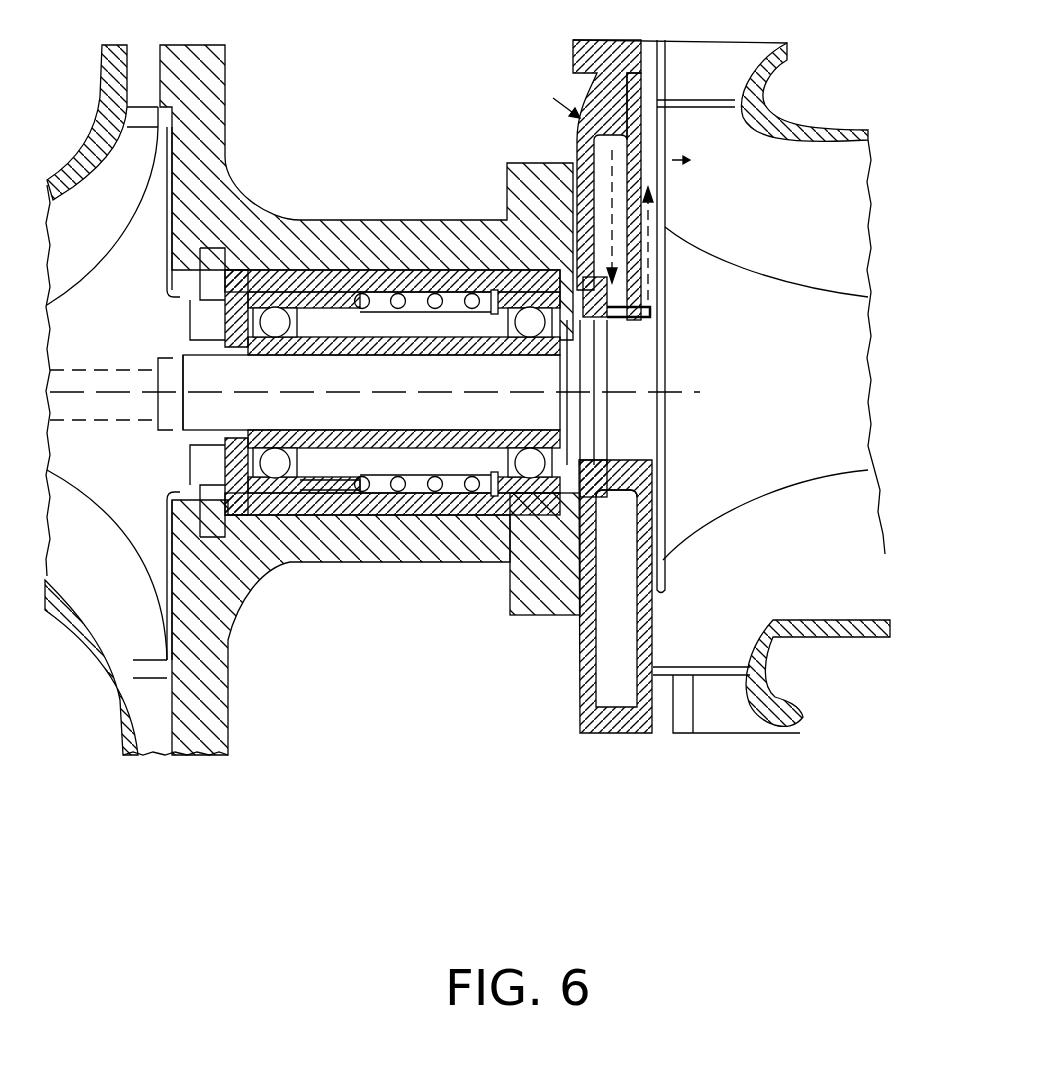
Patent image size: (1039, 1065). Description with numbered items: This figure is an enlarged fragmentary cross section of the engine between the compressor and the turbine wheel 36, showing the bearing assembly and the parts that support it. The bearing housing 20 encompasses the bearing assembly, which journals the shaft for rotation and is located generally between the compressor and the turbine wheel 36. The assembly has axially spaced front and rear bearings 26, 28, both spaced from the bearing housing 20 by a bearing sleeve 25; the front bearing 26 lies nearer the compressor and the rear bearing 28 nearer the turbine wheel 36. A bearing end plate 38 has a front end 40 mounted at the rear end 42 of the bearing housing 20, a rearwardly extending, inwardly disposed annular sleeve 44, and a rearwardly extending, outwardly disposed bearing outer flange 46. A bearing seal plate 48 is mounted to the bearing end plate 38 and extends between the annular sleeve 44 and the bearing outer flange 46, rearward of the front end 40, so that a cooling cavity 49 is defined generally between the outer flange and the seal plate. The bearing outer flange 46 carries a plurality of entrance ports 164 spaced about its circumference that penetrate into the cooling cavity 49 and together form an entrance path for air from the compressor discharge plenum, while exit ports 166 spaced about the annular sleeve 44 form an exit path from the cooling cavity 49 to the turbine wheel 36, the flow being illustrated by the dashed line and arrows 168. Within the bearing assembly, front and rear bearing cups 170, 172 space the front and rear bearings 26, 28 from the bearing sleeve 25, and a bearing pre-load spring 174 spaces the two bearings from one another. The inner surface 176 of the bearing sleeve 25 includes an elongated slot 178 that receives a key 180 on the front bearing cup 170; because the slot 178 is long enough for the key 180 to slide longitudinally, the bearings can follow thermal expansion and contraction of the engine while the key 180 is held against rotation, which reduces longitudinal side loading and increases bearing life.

The bearing housing 20 is at (228, 722).
The bearing sleeve 25 is at (330, 505).
The front bearing 26 is at (231, 615).
The rear bearing 28 is at (497, 458).
The turbine wheel 36 is at (835, 292).
The bearing end plate 38 is at (573, 607).
The front end 40 is at (573, 600).
The rear end 42 is at (660, 560).
The annular sleeve 44 is at (630, 467).
The bearing outer flange 46 is at (633, 663).
The bearing seal plate 48 is at (673, 550).
The cooling cavity 49 is at (627, 155).
The entrance ports 164 is at (590, 128).
The exit ports 166 is at (620, 300).
The dashed line and arrows 168 is at (645, 245).
The front bearing cup 170 is at (258, 485).
The rear bearing cup 172 is at (517, 500).
The bearing pre-load spring 174 is at (437, 485).
The inner surface 176 is at (413, 487).
The elongated slot 178 is at (333, 477).
The key 180 is at (327, 495).